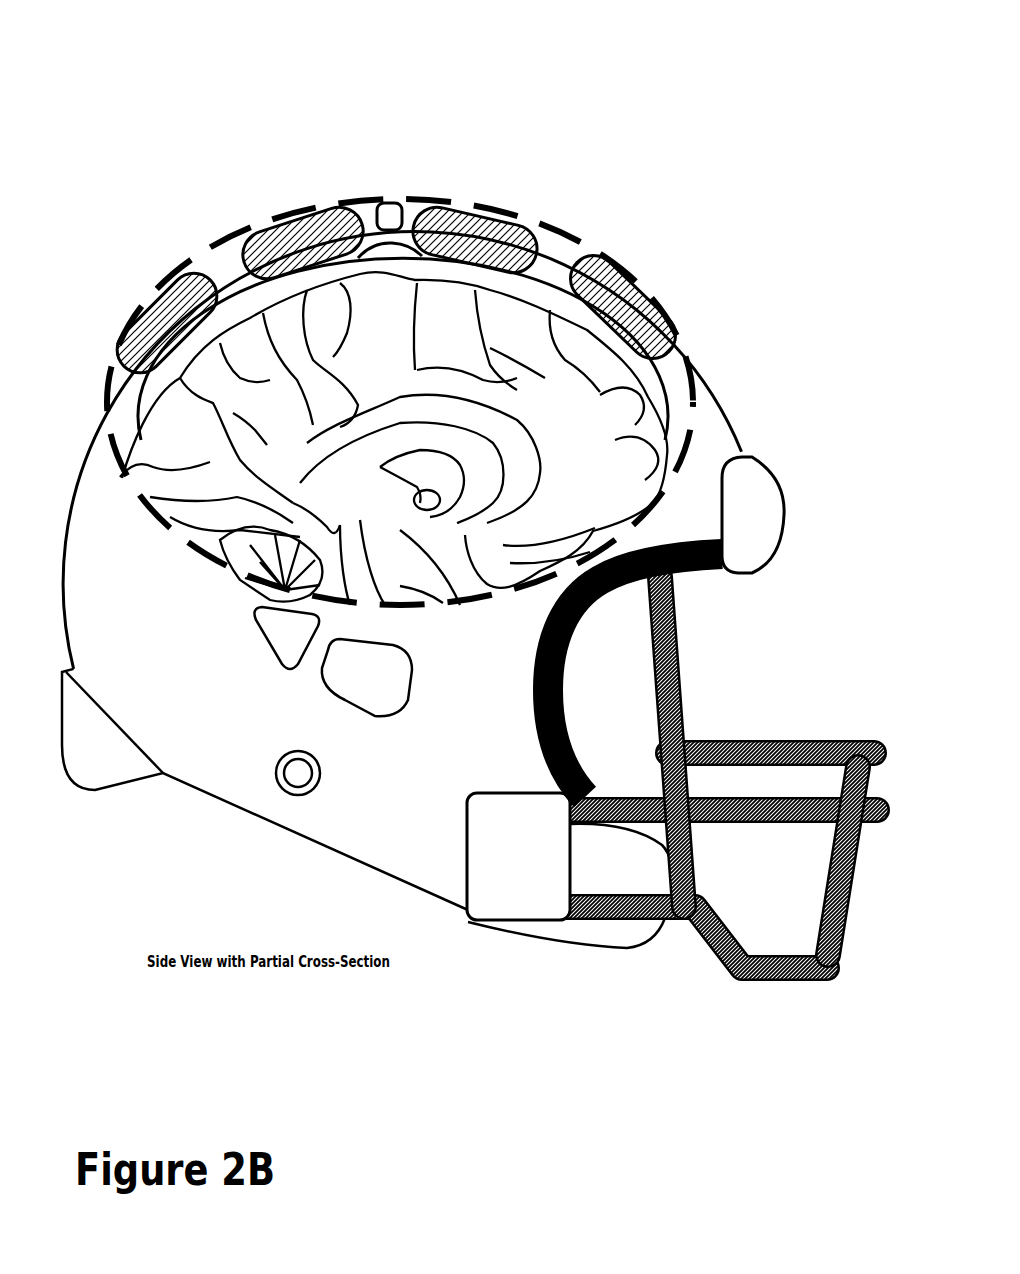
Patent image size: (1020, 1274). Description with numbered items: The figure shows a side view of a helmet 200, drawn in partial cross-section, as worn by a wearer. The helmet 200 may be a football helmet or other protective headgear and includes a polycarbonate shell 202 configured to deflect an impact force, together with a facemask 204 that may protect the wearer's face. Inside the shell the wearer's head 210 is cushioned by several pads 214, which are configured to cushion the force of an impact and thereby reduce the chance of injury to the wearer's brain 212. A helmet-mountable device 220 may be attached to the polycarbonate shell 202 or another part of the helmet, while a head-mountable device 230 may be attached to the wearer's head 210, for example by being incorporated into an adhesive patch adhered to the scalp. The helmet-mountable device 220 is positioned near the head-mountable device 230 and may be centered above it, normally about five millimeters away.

The helmet 200 is at (594, 90).
The polycarbonate shell 202 is at (742, 433).
The facemask 204 is at (867, 737).
The wearer's head 210 is at (662, 380).
The wearer's brain 212 is at (537, 303).
The pads 214 is at (640, 292).
The helmet-mountable device 220 is at (403, 210).
The head-mountable device 230 is at (377, 243).